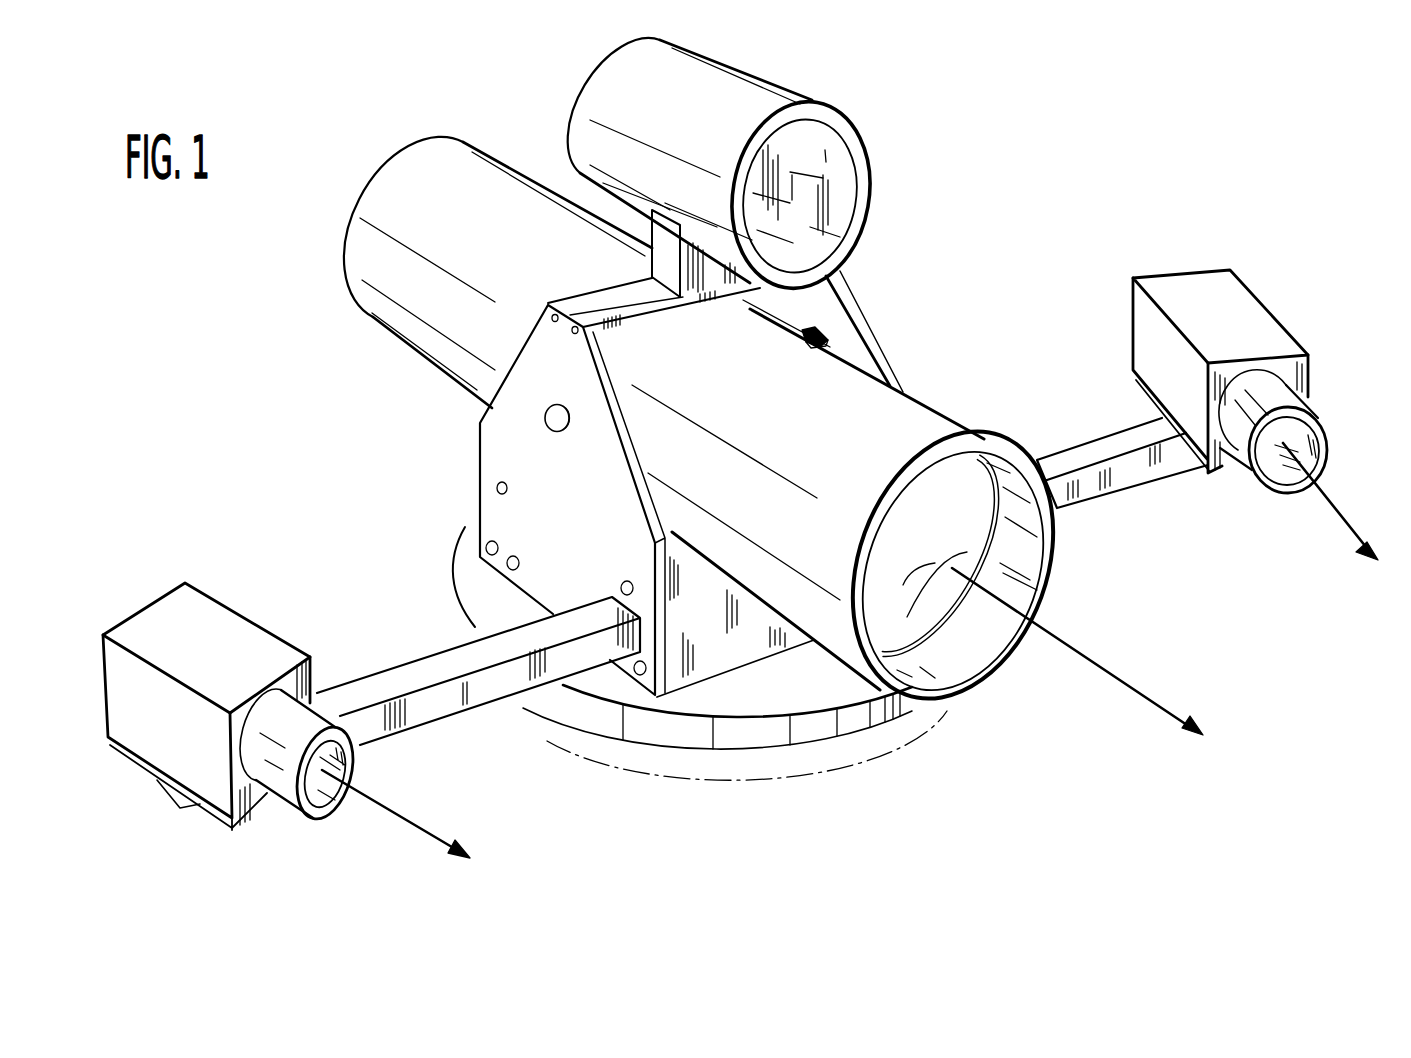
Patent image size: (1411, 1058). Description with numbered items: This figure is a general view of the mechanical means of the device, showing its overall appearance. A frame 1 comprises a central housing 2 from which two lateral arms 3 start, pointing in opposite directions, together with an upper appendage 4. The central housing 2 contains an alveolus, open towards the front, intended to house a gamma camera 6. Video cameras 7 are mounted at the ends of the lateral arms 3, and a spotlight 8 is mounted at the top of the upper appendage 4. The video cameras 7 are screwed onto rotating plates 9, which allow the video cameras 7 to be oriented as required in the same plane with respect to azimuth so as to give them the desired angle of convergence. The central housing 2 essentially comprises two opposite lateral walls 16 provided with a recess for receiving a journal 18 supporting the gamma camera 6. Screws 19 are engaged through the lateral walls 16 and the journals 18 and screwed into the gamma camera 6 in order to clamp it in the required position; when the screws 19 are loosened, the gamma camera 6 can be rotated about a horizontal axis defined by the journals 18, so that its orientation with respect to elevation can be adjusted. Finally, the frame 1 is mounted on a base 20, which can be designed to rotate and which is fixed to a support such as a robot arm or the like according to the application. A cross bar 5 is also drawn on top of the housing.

The frame 1 is at (192, 528).
The central housing 2 is at (753, 642).
The lateral arms 3 is at (424, 673).
The upper appendage 4 is at (660, 245).
The cross bar 5 is at (596, 299).
The gamma camera 6 is at (977, 663).
The video cameras 7 is at (157, 630).
The spotlight 8 is at (838, 147).
The rotating plates 9 is at (134, 758).
The lateral walls 16 is at (487, 465).
The journal 18 is at (833, 338).
The screws 19 is at (559, 433).
The base 20 is at (730, 741).